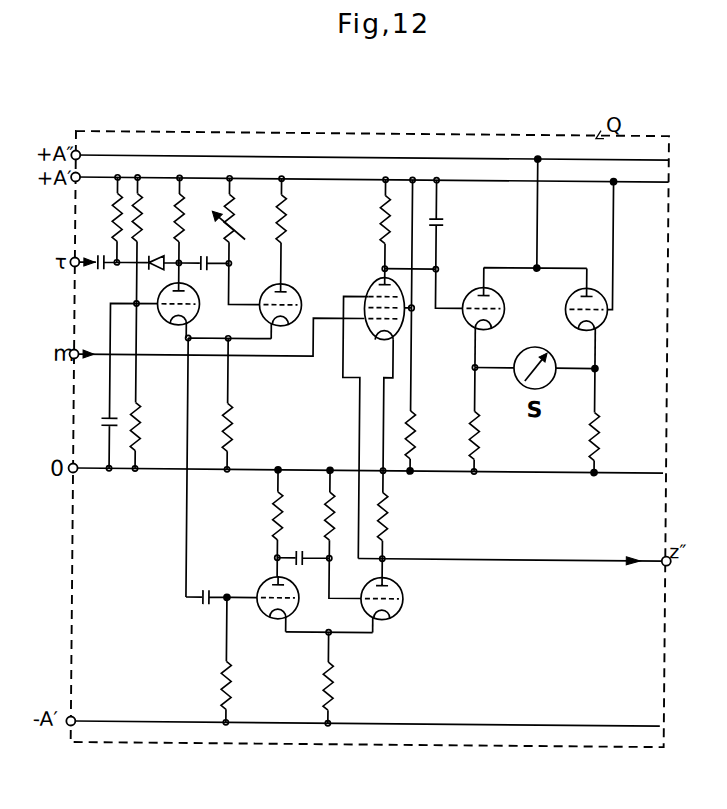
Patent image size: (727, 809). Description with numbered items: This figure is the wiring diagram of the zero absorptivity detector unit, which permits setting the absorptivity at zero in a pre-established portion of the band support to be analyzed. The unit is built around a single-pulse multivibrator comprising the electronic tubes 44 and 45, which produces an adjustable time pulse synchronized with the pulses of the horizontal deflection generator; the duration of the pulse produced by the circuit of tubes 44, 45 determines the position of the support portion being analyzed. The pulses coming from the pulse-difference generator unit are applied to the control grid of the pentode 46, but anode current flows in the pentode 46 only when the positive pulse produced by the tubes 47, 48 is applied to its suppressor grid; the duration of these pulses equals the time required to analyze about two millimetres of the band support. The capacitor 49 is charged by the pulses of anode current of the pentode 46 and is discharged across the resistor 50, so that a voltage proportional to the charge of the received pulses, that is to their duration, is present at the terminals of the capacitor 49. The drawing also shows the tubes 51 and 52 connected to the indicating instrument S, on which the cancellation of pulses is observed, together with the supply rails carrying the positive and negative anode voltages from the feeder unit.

The electronic tube 44 is at (163, 375).
The electronic tube 45 is at (293, 311).
The pentode 46 is at (371, 285).
The tube 47 is at (271, 579).
The tube 48 is at (390, 613).
The capacitor 49 is at (440, 219).
The resistor 50 is at (373, 227).
The triode tube 51 is at (495, 324).
The triode tube 52 is at (578, 297).